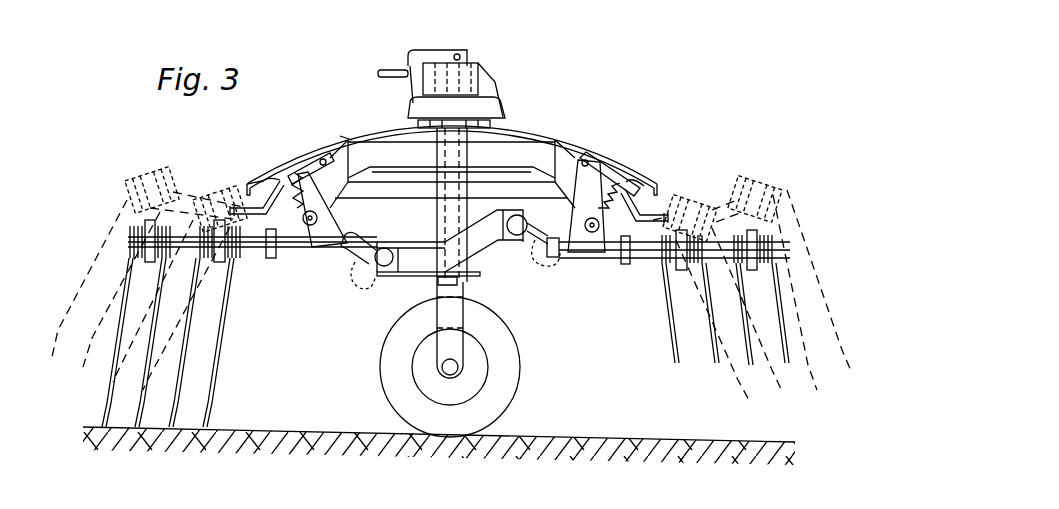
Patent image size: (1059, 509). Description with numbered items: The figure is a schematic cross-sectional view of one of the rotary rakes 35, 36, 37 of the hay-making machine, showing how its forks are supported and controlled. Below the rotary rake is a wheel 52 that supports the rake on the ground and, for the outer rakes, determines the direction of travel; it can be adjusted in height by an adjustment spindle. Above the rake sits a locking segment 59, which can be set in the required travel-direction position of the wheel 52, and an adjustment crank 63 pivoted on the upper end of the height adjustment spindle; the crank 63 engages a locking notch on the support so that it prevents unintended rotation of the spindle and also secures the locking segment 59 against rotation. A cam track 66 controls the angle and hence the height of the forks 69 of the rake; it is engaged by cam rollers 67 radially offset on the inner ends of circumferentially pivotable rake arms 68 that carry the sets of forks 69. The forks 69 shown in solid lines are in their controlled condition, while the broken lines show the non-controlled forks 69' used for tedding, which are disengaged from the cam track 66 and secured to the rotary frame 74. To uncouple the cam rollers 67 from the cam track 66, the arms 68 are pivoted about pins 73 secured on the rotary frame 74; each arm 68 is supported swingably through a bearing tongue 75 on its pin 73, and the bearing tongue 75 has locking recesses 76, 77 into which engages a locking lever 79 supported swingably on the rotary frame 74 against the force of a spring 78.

The rotary rake 35 is at (581, 122).
The rotary rake 36 is at (452, 174).
The rotary rake 37 is at (452, 206).
The wheel 52 is at (513, 366).
The locking segment 59 is at (392, 68).
The adjustment crank 63 is at (424, 63).
The cam track 66 is at (475, 255).
The cam roller 67 is at (388, 272).
The rake arm 68 is at (256, 248).
The forks 69 is at (445, 342).
The non-controlled forks 69' is at (452, 289).
The pin 73 is at (311, 225).
The rotary frame 74 is at (342, 132).
The bearing tongue 75 is at (298, 247).
The locking recess 76 is at (292, 178).
The locking recess 77 is at (297, 172).
The spring 78 is at (270, 183).
The locking lever 79 is at (247, 197).